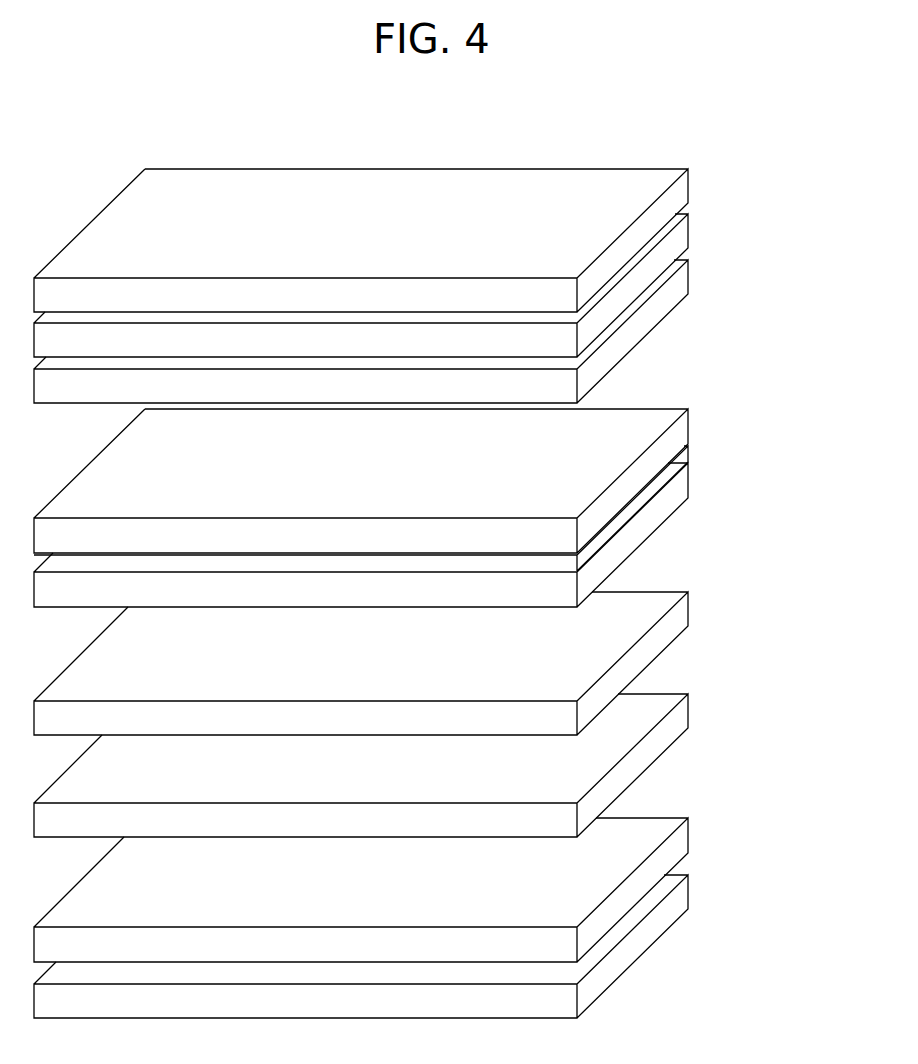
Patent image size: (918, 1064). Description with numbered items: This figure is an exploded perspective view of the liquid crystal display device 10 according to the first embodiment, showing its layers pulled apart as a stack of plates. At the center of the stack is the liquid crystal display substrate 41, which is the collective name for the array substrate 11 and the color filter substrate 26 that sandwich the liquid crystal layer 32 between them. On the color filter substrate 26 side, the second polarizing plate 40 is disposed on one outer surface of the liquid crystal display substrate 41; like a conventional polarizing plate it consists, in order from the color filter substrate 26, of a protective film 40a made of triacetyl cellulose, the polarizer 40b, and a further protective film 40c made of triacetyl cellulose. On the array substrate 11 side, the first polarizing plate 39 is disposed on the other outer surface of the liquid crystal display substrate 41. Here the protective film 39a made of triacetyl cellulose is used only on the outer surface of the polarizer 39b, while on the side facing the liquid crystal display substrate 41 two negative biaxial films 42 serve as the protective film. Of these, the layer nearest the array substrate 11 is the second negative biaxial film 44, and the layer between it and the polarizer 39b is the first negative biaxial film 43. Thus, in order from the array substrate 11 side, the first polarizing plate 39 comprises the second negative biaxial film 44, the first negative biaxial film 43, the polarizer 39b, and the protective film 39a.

The liquid crystal display device 10 is at (528, 118).
The second polarizing plate 40 is at (791, 150).
The protective film 40a is at (673, 201).
The polarizer 40b is at (673, 246).
The protective film 40c is at (673, 292).
The liquid crystal display substrate 41 is at (778, 387).
The color filter substrate 26 is at (673, 441).
The liquid crystal layer 32 is at (675, 462).
The array substrate 11 is at (673, 495).
The negative biaxial films 42 is at (778, 568).
The second negative biaxial film 44 is at (673, 624).
The first negative biaxial film 43 is at (673, 726).
The first polarizing plate 39 is at (828, 883).
The polarizer 39b is at (673, 850).
The protective film 39a is at (673, 907).